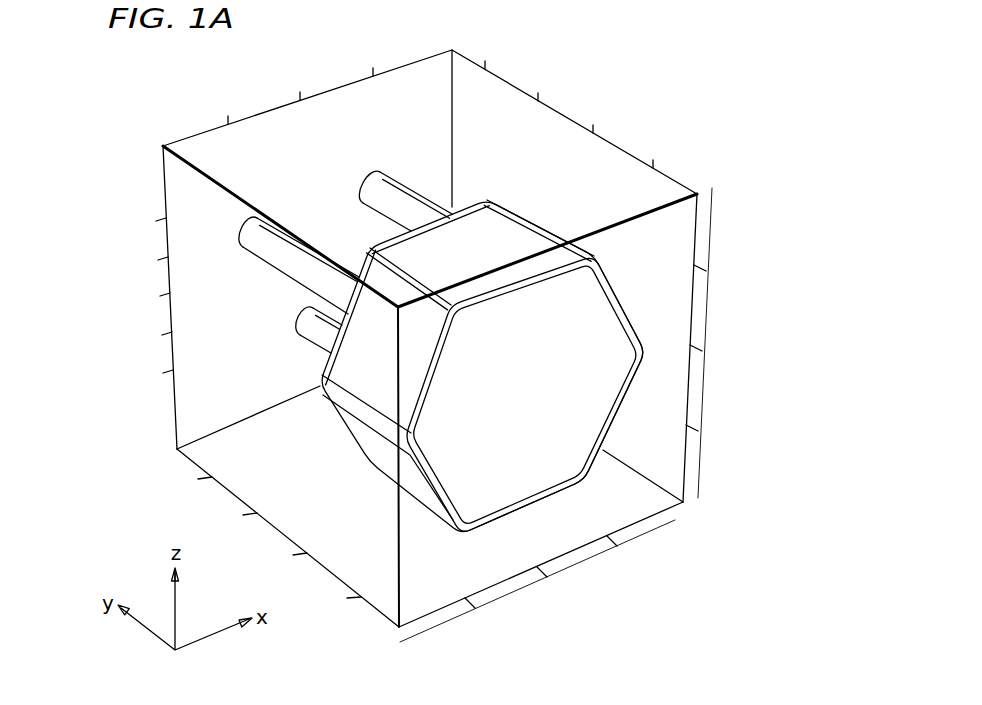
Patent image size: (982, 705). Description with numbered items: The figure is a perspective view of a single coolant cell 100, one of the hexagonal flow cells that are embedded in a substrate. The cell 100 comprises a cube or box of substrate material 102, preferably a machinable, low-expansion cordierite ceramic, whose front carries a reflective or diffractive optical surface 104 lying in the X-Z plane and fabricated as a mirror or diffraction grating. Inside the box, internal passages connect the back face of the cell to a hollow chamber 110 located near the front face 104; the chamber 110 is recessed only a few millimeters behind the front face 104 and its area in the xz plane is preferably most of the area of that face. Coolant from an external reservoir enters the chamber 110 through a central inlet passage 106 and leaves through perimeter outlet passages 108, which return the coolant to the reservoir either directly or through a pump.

The coolant cell 100 is at (406, 404).
The substrate material 102 is at (383, 577).
The optical surface 104 is at (680, 512).
The inlet passage 106 is at (328, 247).
The outlet passages 108 is at (261, 239).
The hollow chamber 110 is at (373, 364).